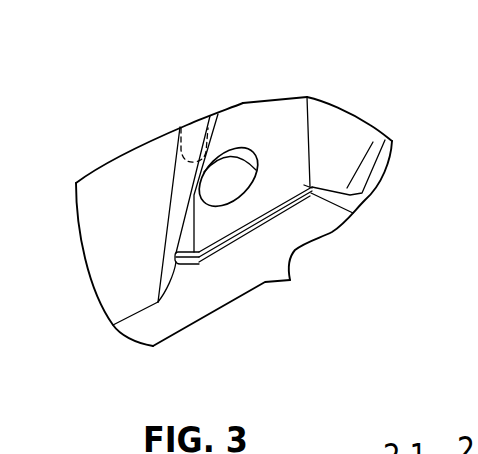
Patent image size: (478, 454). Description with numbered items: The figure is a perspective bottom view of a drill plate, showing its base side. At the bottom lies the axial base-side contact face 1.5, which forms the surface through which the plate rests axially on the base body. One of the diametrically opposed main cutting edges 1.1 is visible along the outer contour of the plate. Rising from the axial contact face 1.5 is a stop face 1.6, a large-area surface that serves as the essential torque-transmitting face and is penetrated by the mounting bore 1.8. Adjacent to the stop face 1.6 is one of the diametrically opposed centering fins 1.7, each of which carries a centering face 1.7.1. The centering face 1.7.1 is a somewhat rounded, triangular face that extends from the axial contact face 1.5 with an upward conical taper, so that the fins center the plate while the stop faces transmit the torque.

The main cutting edge 1.1 is at (107, 162).
The axial base-side contact face 1.5 is at (287, 235).
The stop face 1.6 is at (272, 140).
The centering fin 1.7 is at (212, 265).
The centering face 1.7.1 is at (183, 247).
The mounting bore 1.8 is at (228, 176).